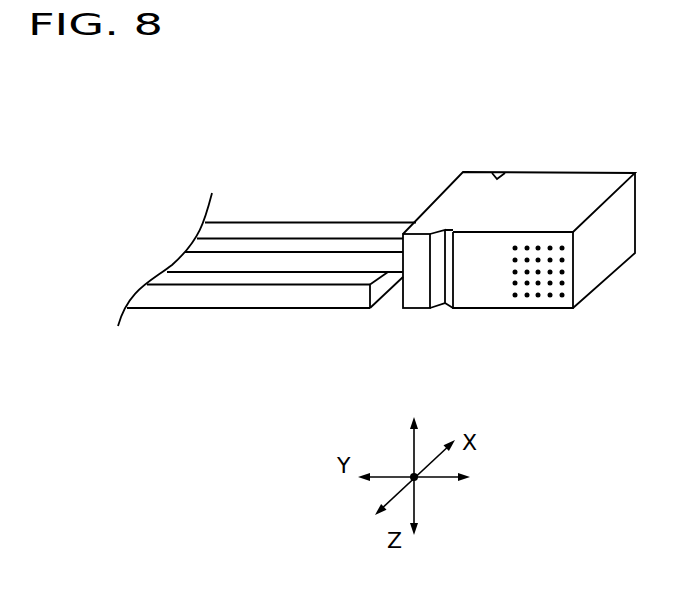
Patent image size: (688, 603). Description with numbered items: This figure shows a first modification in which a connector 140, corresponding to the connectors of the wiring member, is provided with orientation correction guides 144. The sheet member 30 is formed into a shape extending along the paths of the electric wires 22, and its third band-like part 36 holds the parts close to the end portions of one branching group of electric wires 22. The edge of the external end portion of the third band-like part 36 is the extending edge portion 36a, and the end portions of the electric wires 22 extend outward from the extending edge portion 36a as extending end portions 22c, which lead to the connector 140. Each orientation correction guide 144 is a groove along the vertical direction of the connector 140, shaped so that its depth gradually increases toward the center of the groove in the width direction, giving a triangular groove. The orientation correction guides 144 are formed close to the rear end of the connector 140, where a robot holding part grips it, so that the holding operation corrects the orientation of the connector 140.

The sheet member 30 is at (183, 309).
The third band-like part 36 is at (295, 309).
The extending edge portion 36a is at (378, 293).
The electric wires 22 is at (286, 250).
The extending end portions 22c is at (392, 238).
The orientation correction guide 144 is at (500, 171).
The connector 140 is at (569, 162).